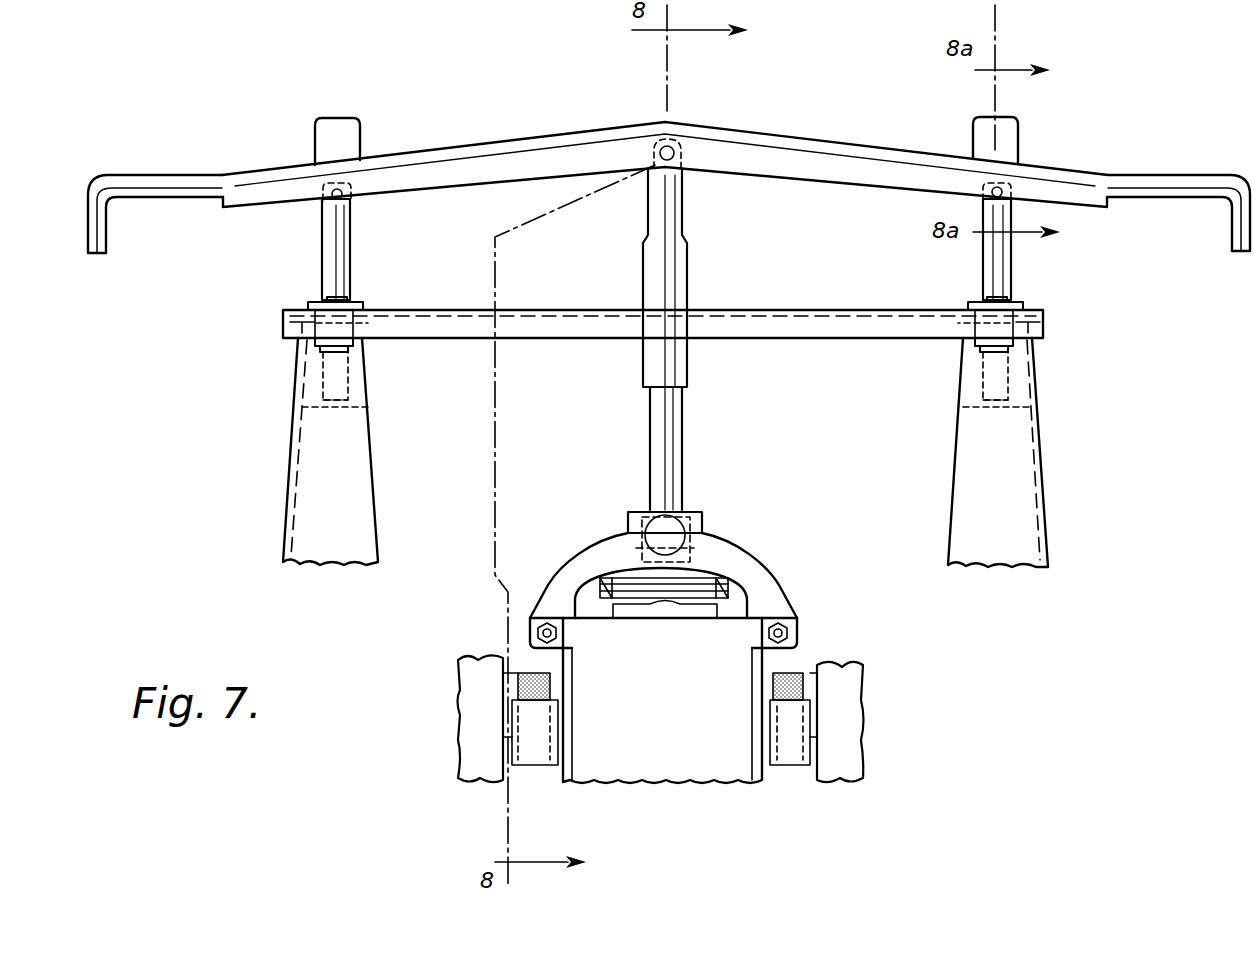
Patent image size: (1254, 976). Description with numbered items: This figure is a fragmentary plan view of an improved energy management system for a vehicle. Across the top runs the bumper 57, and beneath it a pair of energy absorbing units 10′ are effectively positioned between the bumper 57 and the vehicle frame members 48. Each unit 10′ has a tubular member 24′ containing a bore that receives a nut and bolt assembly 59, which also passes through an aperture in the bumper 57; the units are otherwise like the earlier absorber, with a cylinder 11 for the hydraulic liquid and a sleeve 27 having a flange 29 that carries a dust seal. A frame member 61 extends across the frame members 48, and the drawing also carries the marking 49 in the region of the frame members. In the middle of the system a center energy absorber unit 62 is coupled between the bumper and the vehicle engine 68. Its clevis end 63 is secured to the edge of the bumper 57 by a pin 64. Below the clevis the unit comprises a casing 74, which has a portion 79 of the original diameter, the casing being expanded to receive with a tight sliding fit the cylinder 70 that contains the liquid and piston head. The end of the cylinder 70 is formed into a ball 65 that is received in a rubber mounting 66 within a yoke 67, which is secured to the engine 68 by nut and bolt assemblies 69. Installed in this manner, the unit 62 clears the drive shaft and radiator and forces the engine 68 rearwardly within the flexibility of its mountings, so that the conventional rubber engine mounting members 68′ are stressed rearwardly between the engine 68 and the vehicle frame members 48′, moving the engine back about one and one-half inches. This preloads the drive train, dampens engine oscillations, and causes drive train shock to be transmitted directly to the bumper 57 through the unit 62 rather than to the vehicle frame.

The bumper 57 is at (520, 140).
The nut and bolt assembly 59 is at (345, 194).
The pin 64 is at (675, 156).
The clevis end 63 is at (656, 174).
The portion of the casing 79 is at (684, 228).
The casing 74 is at (687, 360).
The cylinder 70 is at (683, 460).
The rubber mounting 66 is at (622, 545).
The ball 65 is at (708, 548).
The yoke 67 is at (757, 575).
The nut and bolt assemblies 69 is at (537, 633).
The vehicle engine 68 is at (698, 735).
The rubber engine mounting members 68′ is at (520, 686).
The vehicle frame members 48′ is at (503, 690).
The tubular member 24′ is at (343, 268).
The energy absorbing units 10′ is at (310, 238).
The flange 29 is at (312, 302).
The frame member 61 is at (848, 336).
The sleeve 27 is at (387, 332).
The cylinder 11 is at (322, 384).
The fitting 49 is at (360, 410).
The vehicle frame members 48 is at (290, 462).
The center energy absorber unit 62 is at (612, 364).